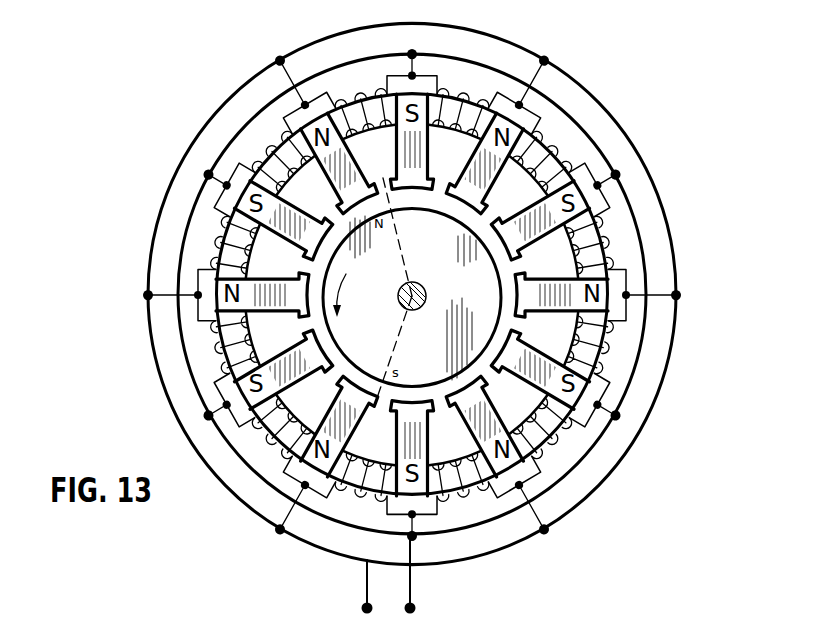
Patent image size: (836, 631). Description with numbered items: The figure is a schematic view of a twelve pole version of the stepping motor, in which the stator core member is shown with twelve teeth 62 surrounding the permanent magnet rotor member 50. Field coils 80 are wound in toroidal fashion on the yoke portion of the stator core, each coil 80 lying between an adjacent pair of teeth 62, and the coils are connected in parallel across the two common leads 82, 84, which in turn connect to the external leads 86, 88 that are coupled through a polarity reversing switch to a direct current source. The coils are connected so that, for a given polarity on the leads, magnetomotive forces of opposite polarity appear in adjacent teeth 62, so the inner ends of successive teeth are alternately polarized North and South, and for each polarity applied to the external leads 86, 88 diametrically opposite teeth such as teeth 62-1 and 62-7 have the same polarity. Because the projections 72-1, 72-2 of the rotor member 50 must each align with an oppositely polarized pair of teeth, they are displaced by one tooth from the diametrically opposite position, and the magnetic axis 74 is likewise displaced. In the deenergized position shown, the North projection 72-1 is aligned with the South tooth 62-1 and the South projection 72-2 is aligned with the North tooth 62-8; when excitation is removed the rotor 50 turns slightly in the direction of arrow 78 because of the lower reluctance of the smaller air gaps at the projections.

The permanent magnet rotor member 50 is at (483, 307).
The teeth 62 is at (533, 367).
The tooth 62-1 is at (400, 181).
The tooth 62-7 is at (447, 470).
The tooth 62-8 is at (295, 462).
The projection 72-1 is at (417, 200).
The projection 72-2 is at (373, 380).
The magnetic axis 74 is at (403, 276).
The arrow 78 is at (356, 268).
The field coils 80 is at (532, 438).
The common lead 82 is at (618, 124).
The common lead 84 is at (633, 210).
The external lead 86 is at (411, 590).
The external lead 88 is at (366, 590).